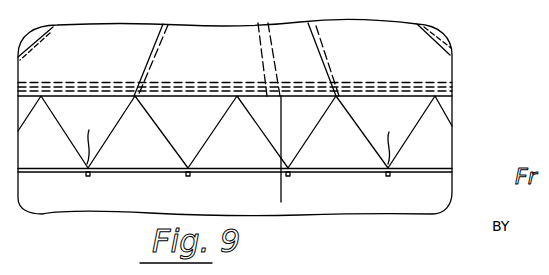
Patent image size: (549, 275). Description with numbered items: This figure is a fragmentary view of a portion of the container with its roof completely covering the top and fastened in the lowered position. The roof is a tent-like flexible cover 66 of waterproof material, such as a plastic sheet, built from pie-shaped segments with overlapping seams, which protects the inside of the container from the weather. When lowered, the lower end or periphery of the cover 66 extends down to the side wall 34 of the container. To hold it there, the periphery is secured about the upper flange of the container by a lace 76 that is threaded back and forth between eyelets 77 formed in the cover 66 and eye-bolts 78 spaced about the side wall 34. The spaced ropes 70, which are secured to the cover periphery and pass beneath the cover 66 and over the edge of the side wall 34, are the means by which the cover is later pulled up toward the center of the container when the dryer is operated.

The side wall 34 is at (432, 145).
The flexible cover 66 is at (218, 53).
The ropes 70 is at (281, 195).
The lace 76 is at (152, 120).
The eyelets 77 is at (134, 96).
The eye-bolts 78 is at (242, 133).